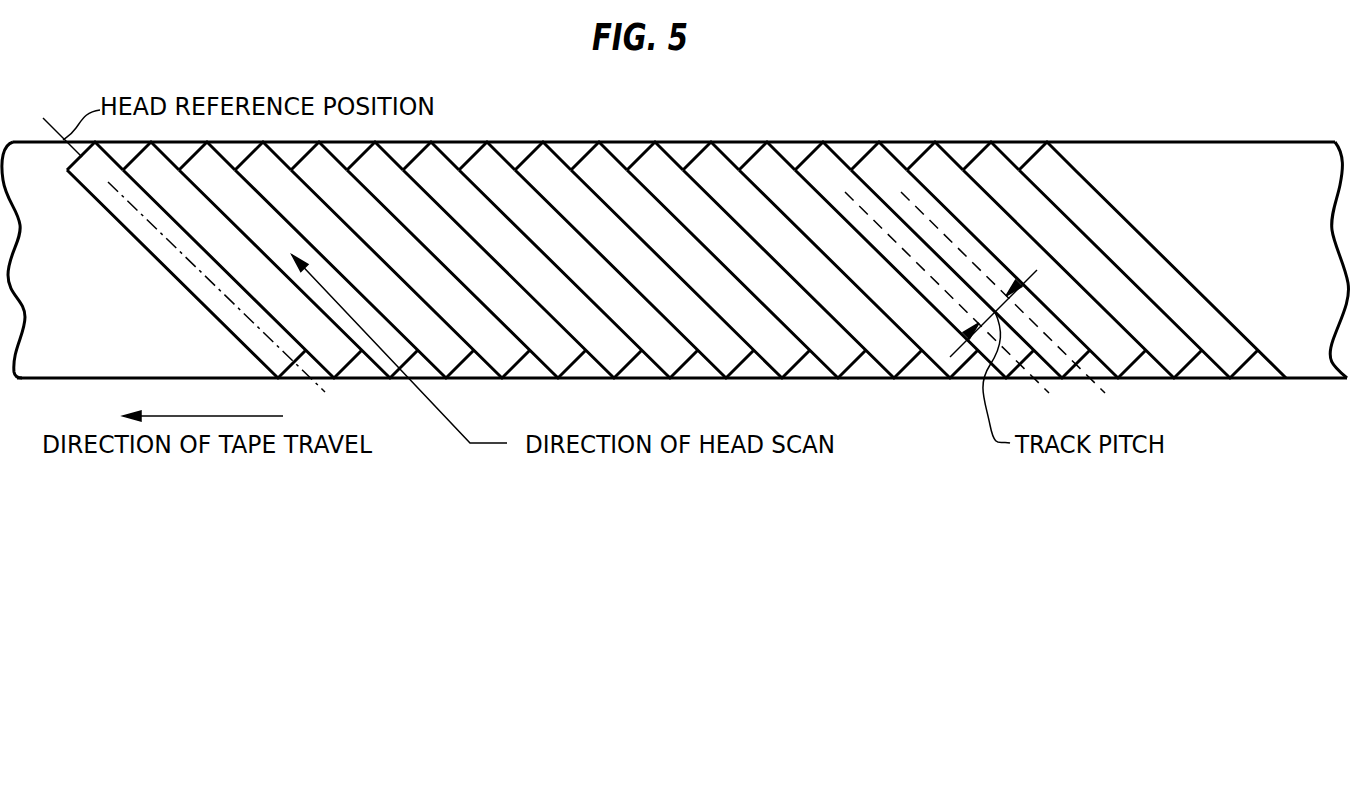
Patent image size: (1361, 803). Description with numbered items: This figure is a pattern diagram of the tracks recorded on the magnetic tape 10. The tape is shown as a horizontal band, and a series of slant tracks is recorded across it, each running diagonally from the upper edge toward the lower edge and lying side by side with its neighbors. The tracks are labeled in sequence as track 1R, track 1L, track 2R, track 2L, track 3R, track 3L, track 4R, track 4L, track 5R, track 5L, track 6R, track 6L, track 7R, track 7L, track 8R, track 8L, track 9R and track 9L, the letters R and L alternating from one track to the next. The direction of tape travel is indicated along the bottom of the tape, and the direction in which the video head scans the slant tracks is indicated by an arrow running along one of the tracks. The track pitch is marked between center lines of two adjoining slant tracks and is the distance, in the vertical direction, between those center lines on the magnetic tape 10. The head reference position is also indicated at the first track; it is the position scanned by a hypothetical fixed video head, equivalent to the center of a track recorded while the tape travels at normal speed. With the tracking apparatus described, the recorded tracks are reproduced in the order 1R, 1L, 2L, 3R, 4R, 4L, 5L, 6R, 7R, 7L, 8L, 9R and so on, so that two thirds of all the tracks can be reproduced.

The magnetic tape 10 is at (1107, 142).
The track 1R is at (186, 260).
The track 1L is at (242, 260).
The track 2R is at (298, 260).
The track 2L is at (354, 260).
The track 3R is at (410, 260).
The track 3L is at (466, 260).
The track 4R is at (522, 260).
The track 4L is at (578, 260).
The track 5R is at (634, 260).
The track 5L is at (690, 260).
The track 6R is at (746, 260).
The track 6L is at (802, 260).
The track 7R is at (858, 260).
The track 7L is at (914, 260).
The track 8R is at (970, 260).
The track 8L is at (1026, 260).
The track 9R is at (1082, 260).
The track 9L is at (1152, 260).